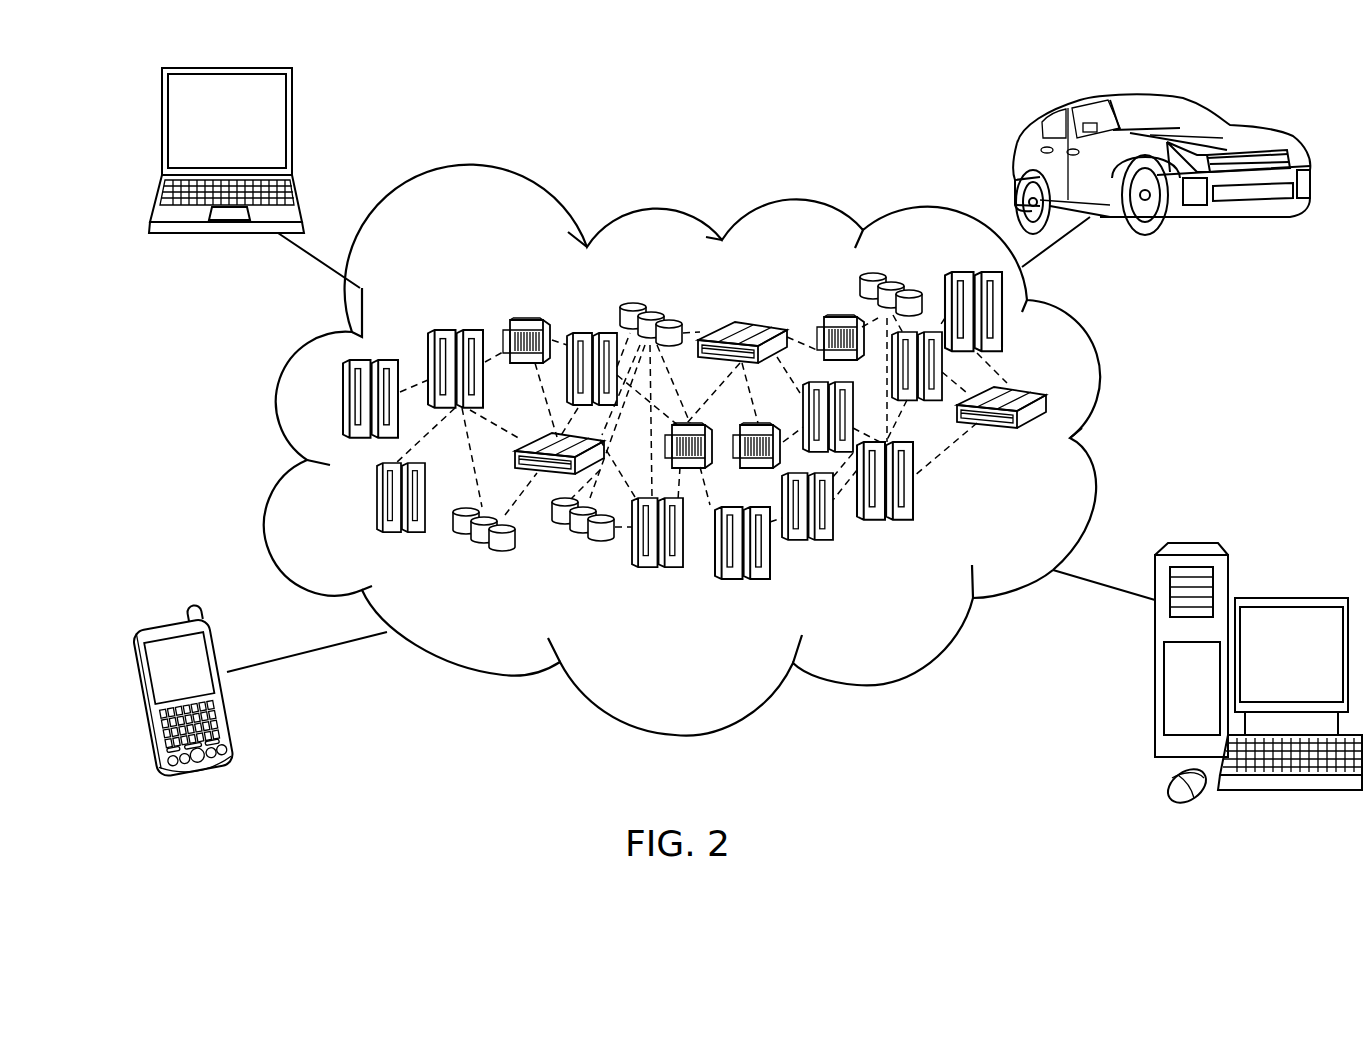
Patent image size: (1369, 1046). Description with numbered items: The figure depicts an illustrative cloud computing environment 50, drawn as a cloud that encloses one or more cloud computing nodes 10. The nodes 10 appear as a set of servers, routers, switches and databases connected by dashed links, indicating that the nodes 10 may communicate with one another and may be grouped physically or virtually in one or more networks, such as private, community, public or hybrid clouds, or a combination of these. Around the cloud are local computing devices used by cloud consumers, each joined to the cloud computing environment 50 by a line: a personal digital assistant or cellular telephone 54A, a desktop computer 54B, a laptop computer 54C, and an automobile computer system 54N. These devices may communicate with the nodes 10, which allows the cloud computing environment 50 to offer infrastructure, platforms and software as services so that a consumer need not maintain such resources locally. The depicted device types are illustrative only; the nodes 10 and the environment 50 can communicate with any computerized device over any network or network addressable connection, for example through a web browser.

The cloud computing nodes 10 is at (1071, 455).
The cloud computing environment 50 is at (1090, 361).
The personal digital assistant or cellular telephone 54A is at (142, 703).
The desktop computer 54B is at (1285, 598).
The laptop computer 54C is at (162, 128).
The automobile computer system 54N is at (1215, 113).